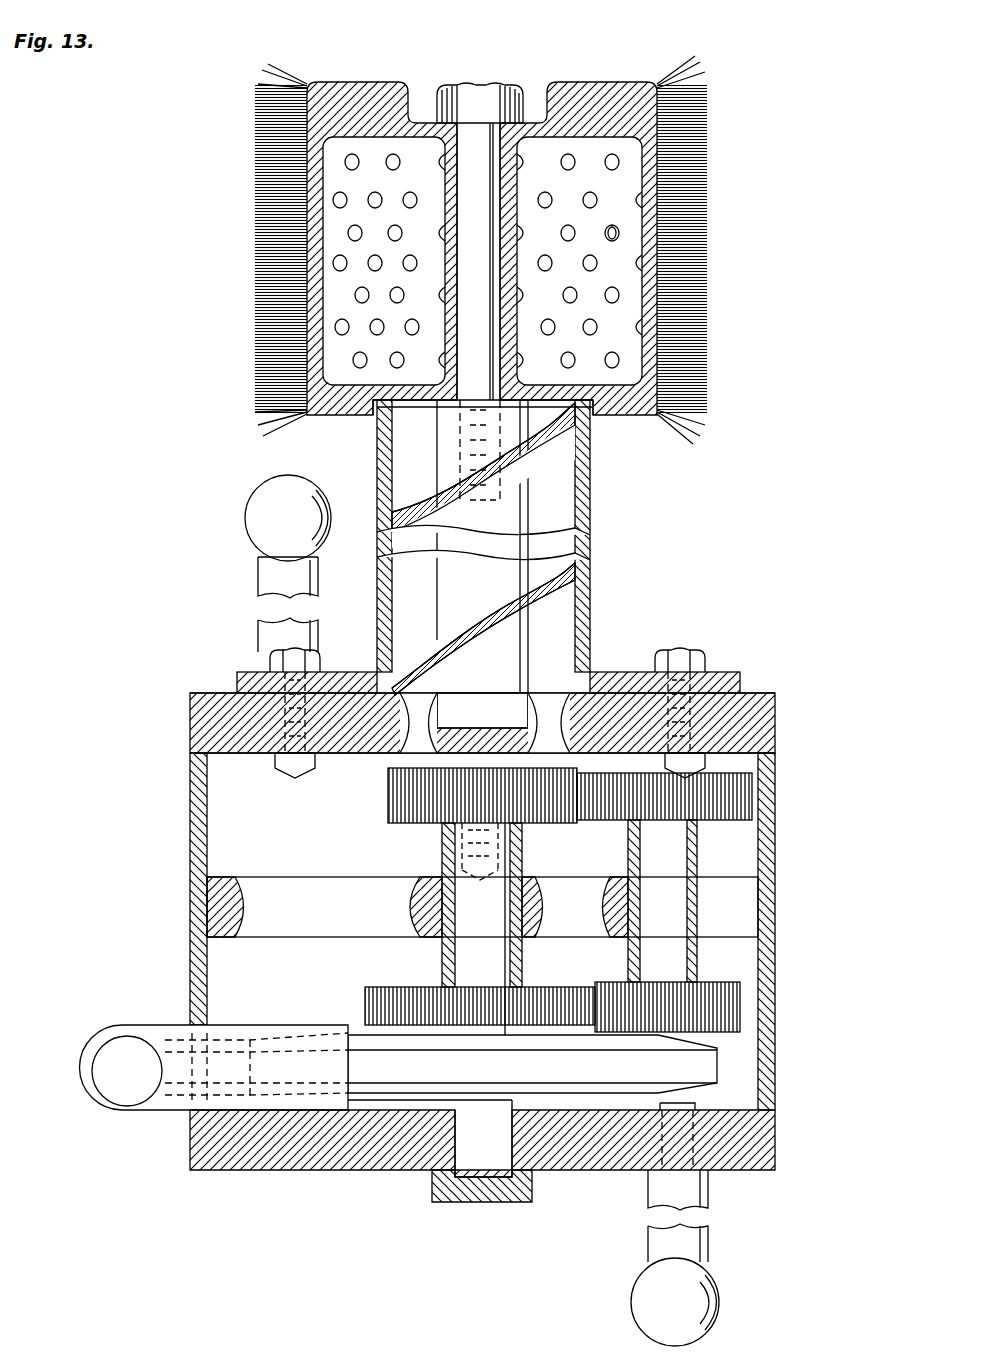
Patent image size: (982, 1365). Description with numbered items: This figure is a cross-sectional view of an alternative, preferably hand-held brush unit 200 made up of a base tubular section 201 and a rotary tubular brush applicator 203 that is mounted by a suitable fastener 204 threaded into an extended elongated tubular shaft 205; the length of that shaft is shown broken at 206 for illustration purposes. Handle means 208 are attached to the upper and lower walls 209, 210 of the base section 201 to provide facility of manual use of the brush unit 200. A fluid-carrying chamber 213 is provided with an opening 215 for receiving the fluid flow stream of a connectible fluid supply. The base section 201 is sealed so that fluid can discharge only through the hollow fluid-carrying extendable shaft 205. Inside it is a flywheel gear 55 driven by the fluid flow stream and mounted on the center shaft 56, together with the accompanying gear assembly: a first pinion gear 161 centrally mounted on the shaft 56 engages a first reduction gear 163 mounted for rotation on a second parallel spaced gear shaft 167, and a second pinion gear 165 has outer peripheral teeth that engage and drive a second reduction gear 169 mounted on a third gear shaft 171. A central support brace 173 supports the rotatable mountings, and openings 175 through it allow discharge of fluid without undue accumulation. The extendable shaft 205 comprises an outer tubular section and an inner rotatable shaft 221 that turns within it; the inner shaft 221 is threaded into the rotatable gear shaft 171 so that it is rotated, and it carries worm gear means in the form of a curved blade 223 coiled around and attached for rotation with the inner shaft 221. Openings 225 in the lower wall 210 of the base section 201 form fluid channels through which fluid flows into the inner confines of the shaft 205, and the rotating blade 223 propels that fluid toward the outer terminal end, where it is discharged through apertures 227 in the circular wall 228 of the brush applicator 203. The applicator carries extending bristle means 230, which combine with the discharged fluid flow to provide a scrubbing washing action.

The rotary tubular brush applicator 203 is at (388, 68).
The fastener 204 is at (480, 96).
The apertures 227 is at (611, 154).
The bristle means 230 is at (698, 200).
The circular wall 228 is at (641, 405).
The inner rotatable shaft 221 is at (518, 496).
The curved blade 223 is at (410, 500).
The brush unit 200 is at (628, 500).
The extended elongated tubular shaft 205 is at (586, 606).
The break 206 is at (576, 532).
The handle means 208 is at (255, 530).
The lower wall 210 is at (240, 691).
The openings 225 is at (400, 745).
The base tubular section 201 is at (192, 780).
The second reduction gear 169 is at (396, 800).
The second pinion gear 165 is at (622, 815).
The second parallel spaced gear shaft 167 is at (689, 866).
The third gear shaft 171 is at (456, 866).
The central support brace 173 is at (312, 890).
The openings 175 is at (248, 890).
The center shaft 56 is at (460, 950).
The first pinion gear 161 is at (368, 1005).
The first reduction gear 163 is at (606, 985).
The flywheel gear 55 is at (718, 1063).
The opening 215 is at (150, 1060).
The fluid-carrying chamber 213 is at (160, 1106).
The upper wall 209 is at (196, 1160).